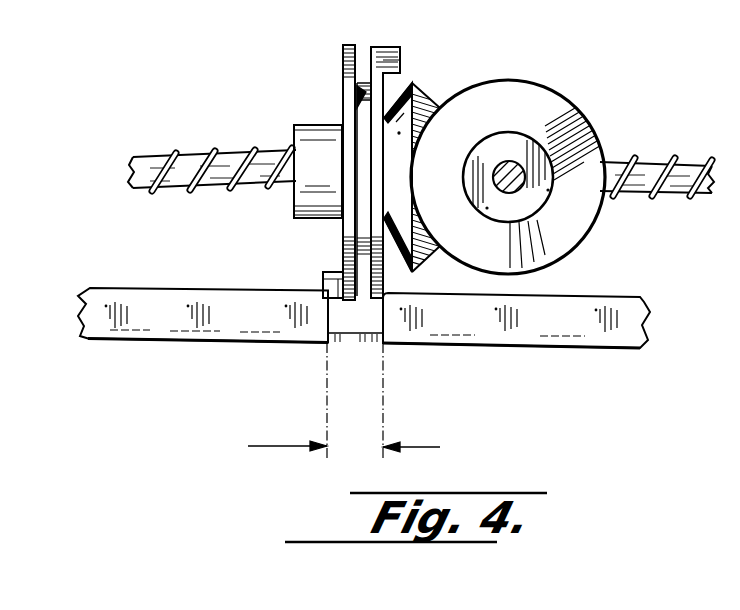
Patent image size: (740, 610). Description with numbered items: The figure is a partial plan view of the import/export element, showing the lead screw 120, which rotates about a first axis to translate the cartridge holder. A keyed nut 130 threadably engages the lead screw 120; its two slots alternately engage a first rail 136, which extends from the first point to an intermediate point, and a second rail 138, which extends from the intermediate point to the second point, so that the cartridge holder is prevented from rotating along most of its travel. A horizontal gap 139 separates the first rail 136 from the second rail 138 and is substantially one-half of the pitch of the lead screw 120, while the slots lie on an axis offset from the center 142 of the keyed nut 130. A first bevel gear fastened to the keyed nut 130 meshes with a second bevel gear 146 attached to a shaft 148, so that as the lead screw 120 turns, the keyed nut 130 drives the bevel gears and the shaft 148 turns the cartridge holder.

The lead screw 120 is at (184, 153).
The keyed nut 130 is at (343, 86).
The first rail 136 is at (478, 322).
The second rail 138 is at (228, 318).
The horizontal gap 139 is at (418, 446).
The center of the keyed nut 142 is at (287, 187).
The second bevel gear 146 is at (587, 107).
The shaft 148 is at (511, 162).